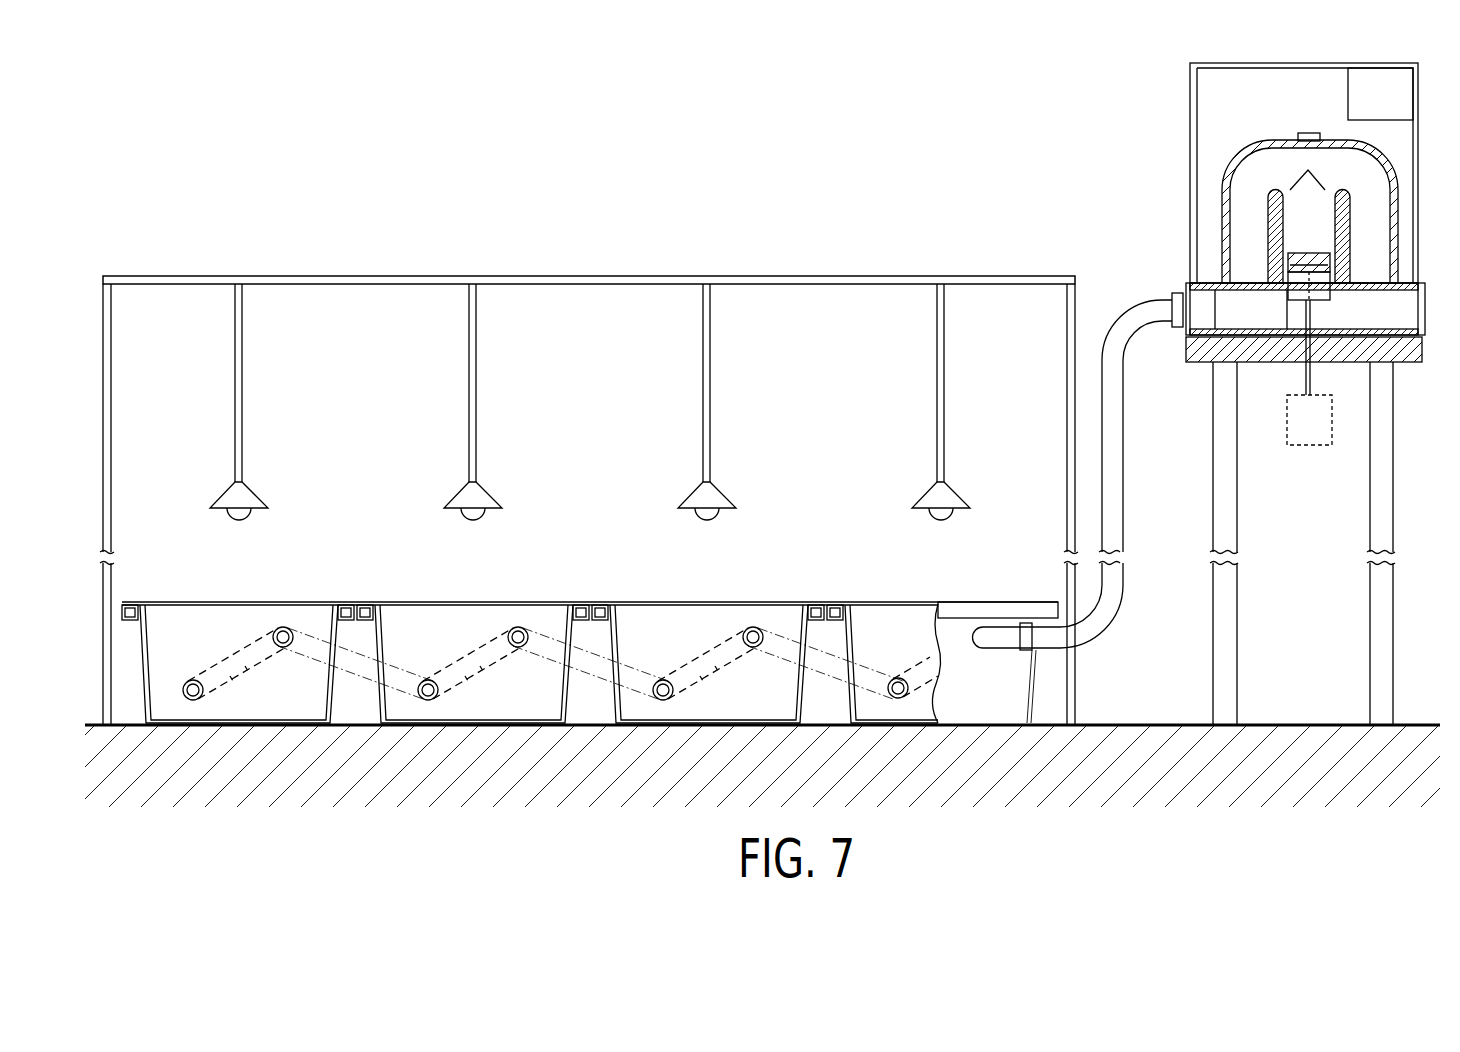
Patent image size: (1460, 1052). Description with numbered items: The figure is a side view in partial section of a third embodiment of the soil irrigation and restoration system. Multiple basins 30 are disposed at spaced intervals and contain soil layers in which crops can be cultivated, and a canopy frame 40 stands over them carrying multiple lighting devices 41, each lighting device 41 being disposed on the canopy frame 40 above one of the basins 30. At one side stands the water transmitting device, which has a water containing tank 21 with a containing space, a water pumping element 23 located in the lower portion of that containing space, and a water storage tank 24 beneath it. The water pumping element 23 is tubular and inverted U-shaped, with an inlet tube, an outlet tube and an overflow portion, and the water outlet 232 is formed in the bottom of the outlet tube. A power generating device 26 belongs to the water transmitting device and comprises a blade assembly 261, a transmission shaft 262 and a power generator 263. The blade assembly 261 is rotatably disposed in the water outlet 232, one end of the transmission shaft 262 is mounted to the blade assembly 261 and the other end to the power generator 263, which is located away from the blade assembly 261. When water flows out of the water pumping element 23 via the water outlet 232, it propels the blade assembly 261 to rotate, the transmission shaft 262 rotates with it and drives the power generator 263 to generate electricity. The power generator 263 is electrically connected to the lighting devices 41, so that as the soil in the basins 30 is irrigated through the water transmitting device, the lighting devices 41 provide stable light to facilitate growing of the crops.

The water containing tank 21 is at (1246, 118).
The water pumping element 23 is at (1223, 163).
The water storage tank 24 is at (1381, 315).
The power generating device 26 is at (1244, 406).
The basin 30 is at (823, 595).
The canopy frame 40 is at (623, 258).
The lighting device 41 is at (720, 493).
The water outlet 232 is at (1327, 273).
The blade assembly 261 is at (1300, 262).
The transmission shaft 262 is at (1307, 378).
The power generator 263 is at (1312, 428).